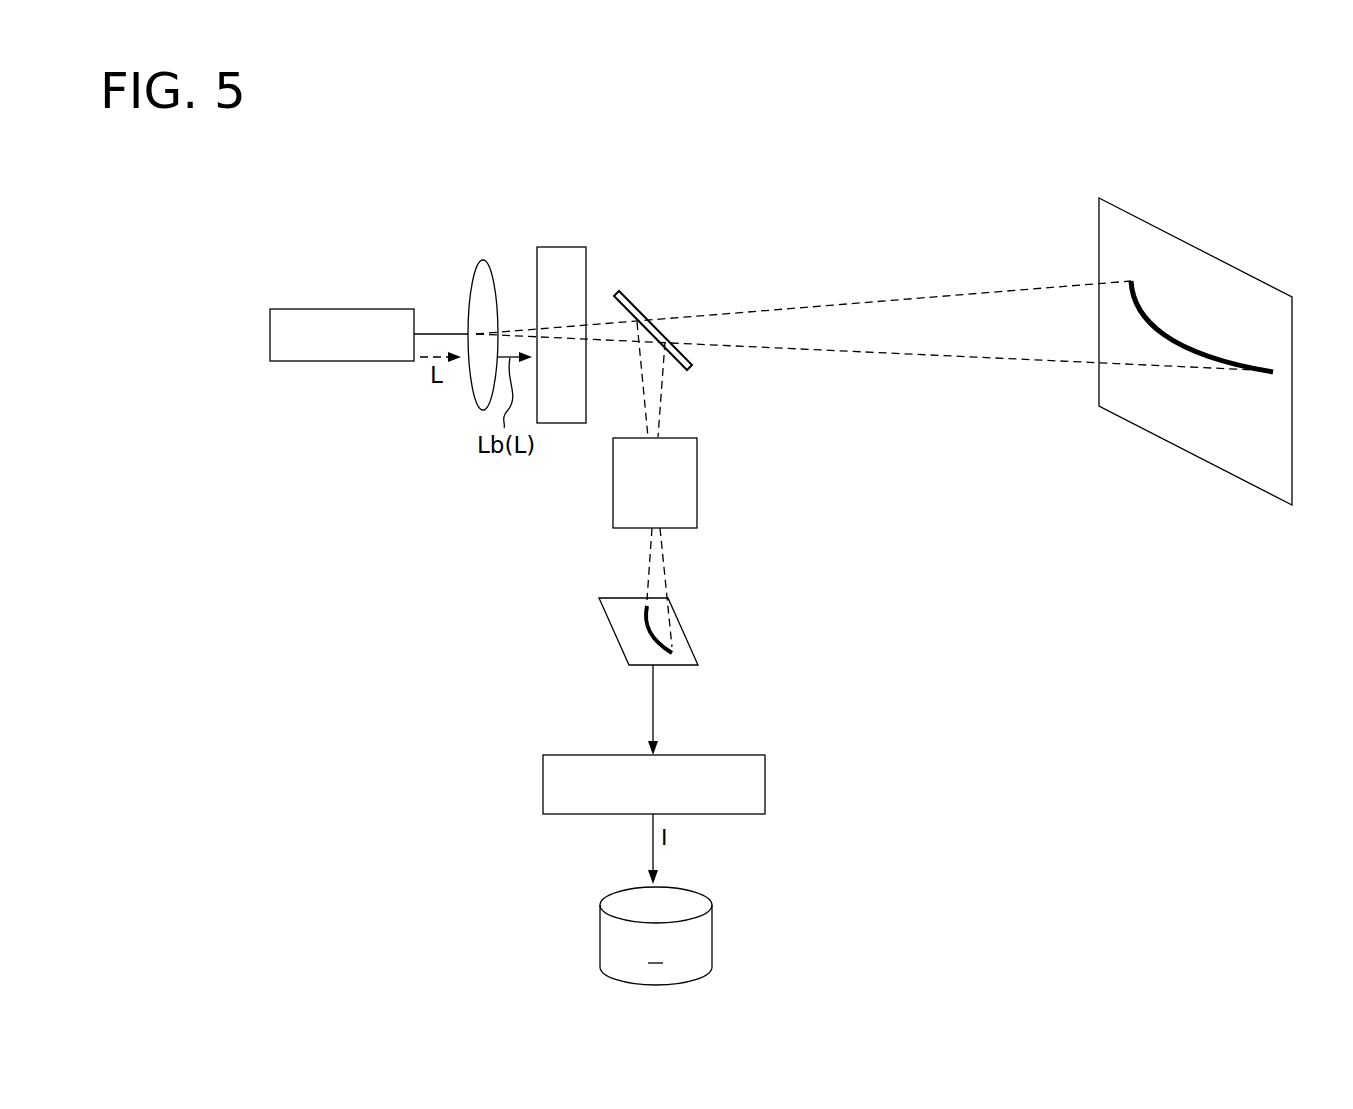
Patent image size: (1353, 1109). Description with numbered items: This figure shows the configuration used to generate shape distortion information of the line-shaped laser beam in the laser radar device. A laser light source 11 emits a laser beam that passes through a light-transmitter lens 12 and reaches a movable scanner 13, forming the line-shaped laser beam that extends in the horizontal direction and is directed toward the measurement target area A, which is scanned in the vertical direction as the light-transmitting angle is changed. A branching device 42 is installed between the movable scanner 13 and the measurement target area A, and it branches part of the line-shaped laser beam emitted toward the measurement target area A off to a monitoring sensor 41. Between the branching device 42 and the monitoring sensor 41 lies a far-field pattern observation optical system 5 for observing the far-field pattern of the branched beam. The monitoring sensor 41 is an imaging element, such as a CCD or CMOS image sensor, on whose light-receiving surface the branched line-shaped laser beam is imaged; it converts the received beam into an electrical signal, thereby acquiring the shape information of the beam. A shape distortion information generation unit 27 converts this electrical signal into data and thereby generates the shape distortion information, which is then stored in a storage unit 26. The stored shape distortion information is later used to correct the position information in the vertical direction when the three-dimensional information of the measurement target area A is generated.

The laser light source 11 is at (386, 313).
The light-transmitter lens 12 is at (487, 263).
The movable scanner 13 is at (580, 247).
The branching device 42 is at (692, 362).
The far-field pattern observation optical system 5 is at (697, 468).
The monitoring sensor 41 is at (680, 618).
The shape distortion information generation unit 27 is at (715, 755).
The storage unit 26 is at (697, 893).
The measurement target area A is at (1272, 287).